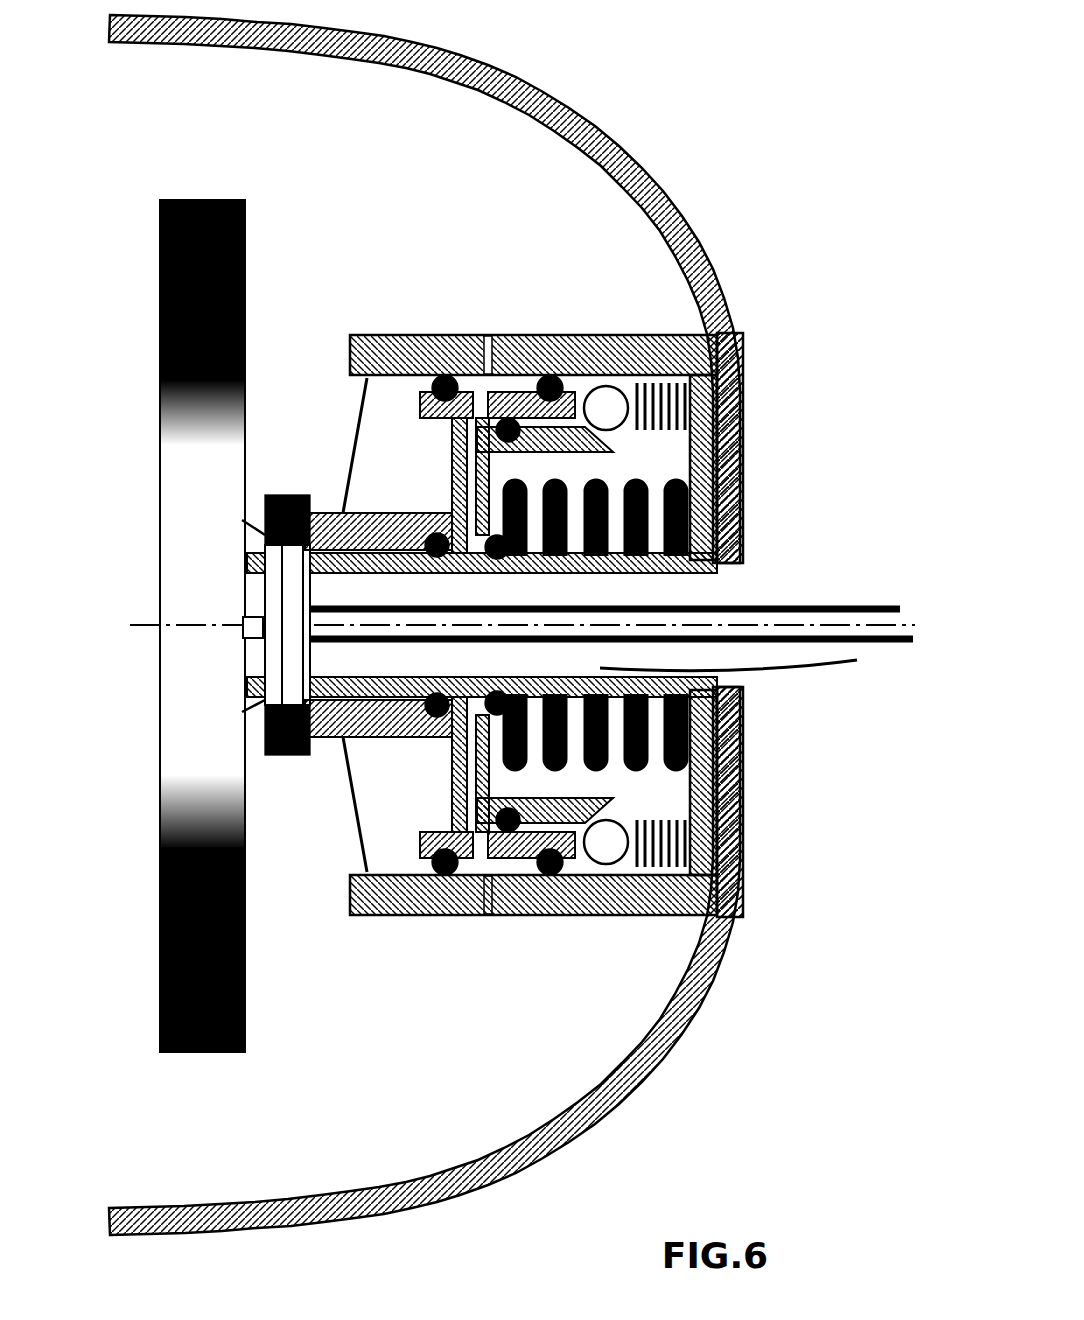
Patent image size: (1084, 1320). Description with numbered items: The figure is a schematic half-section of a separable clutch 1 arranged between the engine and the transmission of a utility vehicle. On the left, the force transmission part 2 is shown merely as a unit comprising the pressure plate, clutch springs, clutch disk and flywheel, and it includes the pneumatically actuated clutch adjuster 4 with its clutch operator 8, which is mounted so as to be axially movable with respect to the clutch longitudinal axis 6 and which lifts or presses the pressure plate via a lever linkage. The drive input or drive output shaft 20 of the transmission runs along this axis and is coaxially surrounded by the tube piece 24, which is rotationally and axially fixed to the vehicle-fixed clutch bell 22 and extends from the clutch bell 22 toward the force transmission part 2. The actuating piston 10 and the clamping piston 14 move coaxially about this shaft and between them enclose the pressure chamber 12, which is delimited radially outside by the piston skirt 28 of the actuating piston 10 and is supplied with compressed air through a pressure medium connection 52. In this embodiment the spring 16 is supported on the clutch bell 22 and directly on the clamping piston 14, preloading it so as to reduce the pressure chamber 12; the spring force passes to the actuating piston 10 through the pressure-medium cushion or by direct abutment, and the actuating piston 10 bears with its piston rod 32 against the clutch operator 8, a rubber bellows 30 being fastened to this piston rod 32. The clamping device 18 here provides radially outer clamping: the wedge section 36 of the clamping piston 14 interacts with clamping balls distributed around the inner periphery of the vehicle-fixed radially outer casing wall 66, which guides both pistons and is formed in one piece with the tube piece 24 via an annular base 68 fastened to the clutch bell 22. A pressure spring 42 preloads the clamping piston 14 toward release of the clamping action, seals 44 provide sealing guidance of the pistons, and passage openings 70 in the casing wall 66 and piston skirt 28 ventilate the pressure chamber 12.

The separable clutch 1 is at (757, 140).
The force transmission part 2 is at (160, 942).
The clutch adjuster 4 is at (327, 1032).
The clutch longitudinal axis 6 is at (152, 626).
The clutch operator 8 is at (262, 730).
The actuating piston 10 is at (385, 517).
The pressure chamber 12 is at (447, 434).
The clamping piston 14 is at (528, 395).
The spring 16 is at (740, 725).
The clamping device 18 is at (569, 272).
The drive input or drive output shaft 20 is at (780, 605).
The clutch bell 22 is at (655, 1048).
The tube piece 24 is at (754, 666).
The piston skirt 28 is at (565, 885).
The rubber bellows 30 is at (392, 742).
The piston rod 32 is at (362, 785).
The wedge section 36 is at (520, 880).
The pressure spring 42 is at (710, 385).
The seals 44 is at (440, 885).
The pressure medium connection 52 is at (483, 328).
The radially outer casing wall 66 is at (641, 350).
The annular base 68 is at (715, 452).
The passage openings 70 is at (485, 335).